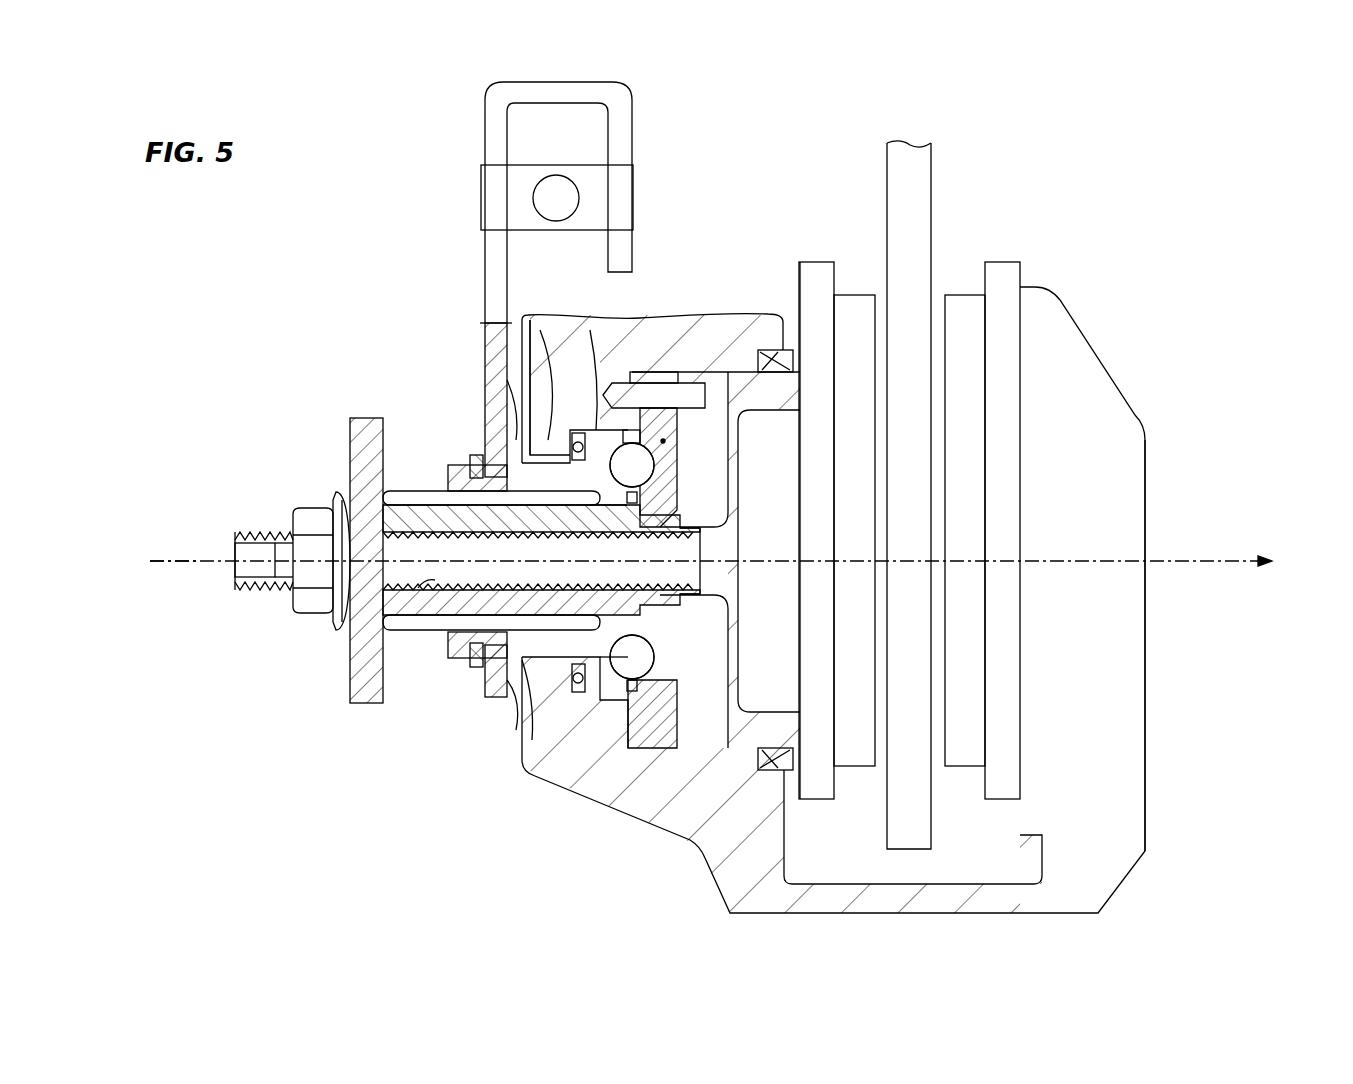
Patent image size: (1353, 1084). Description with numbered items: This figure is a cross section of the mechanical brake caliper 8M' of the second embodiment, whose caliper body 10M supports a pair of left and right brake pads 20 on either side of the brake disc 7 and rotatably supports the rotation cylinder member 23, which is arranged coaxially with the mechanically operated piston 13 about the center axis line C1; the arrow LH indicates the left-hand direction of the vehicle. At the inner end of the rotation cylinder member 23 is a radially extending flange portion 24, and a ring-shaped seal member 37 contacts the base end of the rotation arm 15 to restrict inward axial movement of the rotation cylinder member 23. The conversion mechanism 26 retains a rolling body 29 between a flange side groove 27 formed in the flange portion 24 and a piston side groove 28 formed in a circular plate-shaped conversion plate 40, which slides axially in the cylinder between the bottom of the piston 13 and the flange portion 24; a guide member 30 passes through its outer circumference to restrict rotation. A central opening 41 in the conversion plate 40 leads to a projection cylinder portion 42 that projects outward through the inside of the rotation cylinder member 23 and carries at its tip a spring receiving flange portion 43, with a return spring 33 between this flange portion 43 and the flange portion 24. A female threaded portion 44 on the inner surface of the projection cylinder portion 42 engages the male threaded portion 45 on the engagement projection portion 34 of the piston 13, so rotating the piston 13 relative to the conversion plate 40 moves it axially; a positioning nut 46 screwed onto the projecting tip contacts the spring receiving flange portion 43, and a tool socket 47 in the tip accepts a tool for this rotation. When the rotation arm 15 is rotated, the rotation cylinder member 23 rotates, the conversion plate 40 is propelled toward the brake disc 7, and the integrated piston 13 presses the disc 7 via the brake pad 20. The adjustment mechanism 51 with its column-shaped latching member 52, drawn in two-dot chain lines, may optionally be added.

The brake disc 7 is at (918, 176).
The mechanical brake caliper 8M' is at (1165, 498).
The caliper body 10M is at (646, 815).
The mechanically operated piston 13 is at (775, 350).
The rotation arm 15 is at (492, 352).
The brake pads 20 is at (862, 296).
The rotation cylinder member 23 is at (524, 400).
The flange portion 24 is at (545, 430).
The conversion mechanism 26 is at (692, 425).
The flange side groove 27 is at (563, 430).
The piston side groove 28 is at (657, 488).
The rolling body 29 is at (648, 435).
The guide member 30 is at (650, 383).
The return spring 33 is at (426, 492).
The engagement projection portion 34 is at (460, 630).
The seal member 37 is at (500, 330).
The conversion plate 40 is at (702, 446).
The opening 41 is at (672, 570).
The projection cylinder portion 42 is at (458, 475).
The spring receiving flange portion 43 is at (362, 420).
The female threaded portion 44 is at (347, 505).
The male threaded portion 45 is at (428, 592).
The positioning nut 46 is at (300, 520).
The tool socket 47 is at (250, 590).
The adjustment mechanism 51 is at (470, 182).
The latching member 52 is at (575, 165).
The center axis line C1 is at (160, 556).
The left-hand direction LH is at (732, 562).